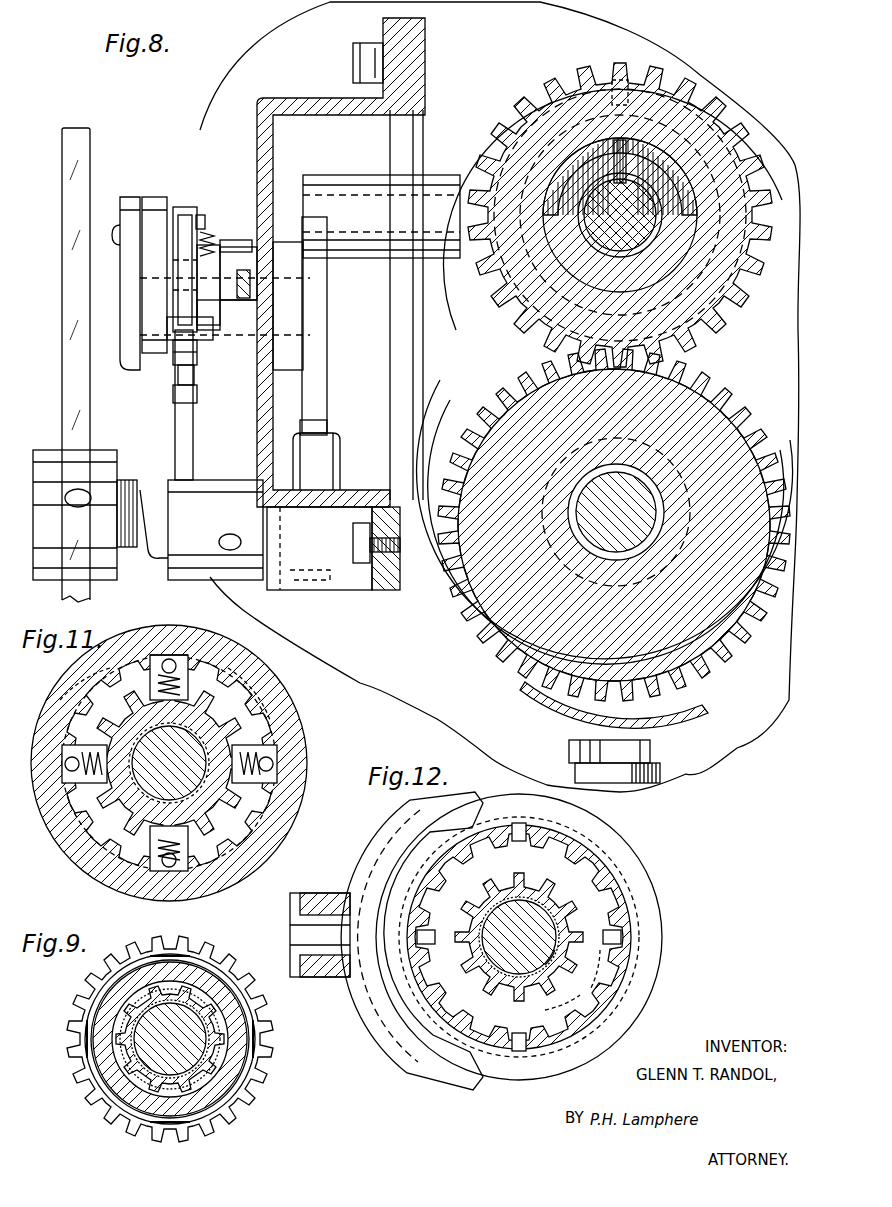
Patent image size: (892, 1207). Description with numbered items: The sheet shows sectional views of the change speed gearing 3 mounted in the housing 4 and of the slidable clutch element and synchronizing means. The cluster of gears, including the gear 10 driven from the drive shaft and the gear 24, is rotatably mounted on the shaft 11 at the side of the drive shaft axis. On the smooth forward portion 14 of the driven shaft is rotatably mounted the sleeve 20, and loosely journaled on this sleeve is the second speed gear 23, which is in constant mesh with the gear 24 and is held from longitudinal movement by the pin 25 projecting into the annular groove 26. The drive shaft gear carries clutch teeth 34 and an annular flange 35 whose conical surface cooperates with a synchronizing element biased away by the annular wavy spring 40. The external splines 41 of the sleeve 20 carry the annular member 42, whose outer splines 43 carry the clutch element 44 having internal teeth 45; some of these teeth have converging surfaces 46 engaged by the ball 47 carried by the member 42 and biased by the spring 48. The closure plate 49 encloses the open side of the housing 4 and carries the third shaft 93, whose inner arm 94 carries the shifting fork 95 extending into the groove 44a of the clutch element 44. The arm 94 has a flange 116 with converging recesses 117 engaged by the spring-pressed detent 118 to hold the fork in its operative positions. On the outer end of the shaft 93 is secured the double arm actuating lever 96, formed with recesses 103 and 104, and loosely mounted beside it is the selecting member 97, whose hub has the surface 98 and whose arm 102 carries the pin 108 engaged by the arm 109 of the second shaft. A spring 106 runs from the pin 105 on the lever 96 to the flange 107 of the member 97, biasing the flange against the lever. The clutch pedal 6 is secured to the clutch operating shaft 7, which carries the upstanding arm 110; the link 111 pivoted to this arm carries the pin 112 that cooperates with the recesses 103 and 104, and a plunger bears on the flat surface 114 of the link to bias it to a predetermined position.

In FIG. 8, the change speed gearing 3 is at (731, 48).
In FIG. 8, the housing 4 is at (718, 720).
In FIG. 8, the clutch pedal 6 is at (82, 160).
In FIG. 8, the clutch operating shaft 7 is at (156, 552).
In FIG. 8, the gear 10 is at (474, 378).
In FIG. 8, the shaft 11 is at (746, 398).
In FIG. 8, the smooth portion 14 is at (632, 222).
In FIG. 11, the smooth portion 14 is at (230, 800).
In FIG. 9, the smooth portion 14 is at (196, 1040).
In FIG. 12, the smooth portion 14 is at (545, 925).
In FIG. 8, the sleeve 20 is at (660, 250).
In FIG. 11, the sleeve 20 is at (210, 740).
In FIG. 9, the sleeve 20 is at (205, 1060).
In FIG. 8, the second speed gear 23 is at (727, 99).
In FIG. 8, the gear 24 is at (724, 366).
In FIG. 8, the pin 25 is at (626, 156).
In FIG. 8, the annular groove 26 is at (690, 186).
In FIG. 9, the clutch teeth 34 is at (200, 955).
In FIG. 9, the annular flange 35 is at (226, 1010).
In FIG. 9, the annular wavy spring 40 is at (236, 985).
In FIG. 11, the splines 41 is at (190, 660).
In FIG. 9, the splines 41 is at (218, 985).
In FIG. 12, the splines 41 is at (583, 935).
In FIG. 11, the annular member 42 is at (240, 700).
In FIG. 12, the annular member 42 is at (610, 963).
In FIG. 11, the splines 43 is at (260, 740).
In FIG. 12, the splines 43 is at (582, 972).
In FIG. 11, the clutch element 44 is at (292, 728).
In FIG. 12, the clutch element 44 is at (612, 860).
In FIG. 8, the groove 44a is at (627, 96).
In FIG. 12, the groove 44a is at (519, 937).
In FIG. 11, the internal teeth 45 is at (275, 773).
In FIG. 11, the converging surfaces 46 is at (165, 658).
In FIG. 12, the converging surfaces 46 is at (520, 828).
In FIG. 11, the ball 47 is at (172, 670).
In FIG. 11, the spring 48 is at (160, 667).
In FIG. 8, the closure plate 49 is at (292, 100).
In FIG. 8, the third shaft 93 is at (318, 290).
In FIG. 8, the arm 94 is at (318, 178).
In FIG. 12, the arm 94 is at (330, 978).
In FIG. 8, the shifting fork 95 is at (462, 262).
In FIG. 12, the shifting fork 95 is at (375, 868).
In FIG. 8, the double arm actuating lever 96 is at (188, 210).
In FIG. 8, the selecting member 97 is at (220, 362).
In FIG. 8, the surface 98 is at (200, 302).
In FIG. 8, the arm 102 is at (228, 308).
In FIG. 8, the recess 103 is at (180, 250).
In FIG. 8, the recess 104 is at (182, 352).
In FIG. 8, the pin 105 is at (202, 214).
In FIG. 8, the spring 106 is at (212, 232).
In FIG. 8, the flange 107 is at (197, 260).
In FIG. 8, the pin 108 is at (240, 246).
In FIG. 8, the arm 109 is at (250, 292).
In FIG. 8, the upstanding arm 110 is at (193, 440).
In FIG. 8, the link 111 is at (155, 196).
In FIG. 8, the pin 112 is at (185, 340).
In FIG. 8, the flat surface 114 is at (112, 235).
In FIG. 8, the flange 116 is at (327, 376).
In FIG. 8, the recesses 117 is at (322, 410).
In FIG. 8, the spring-pressed detent 118 is at (326, 420).